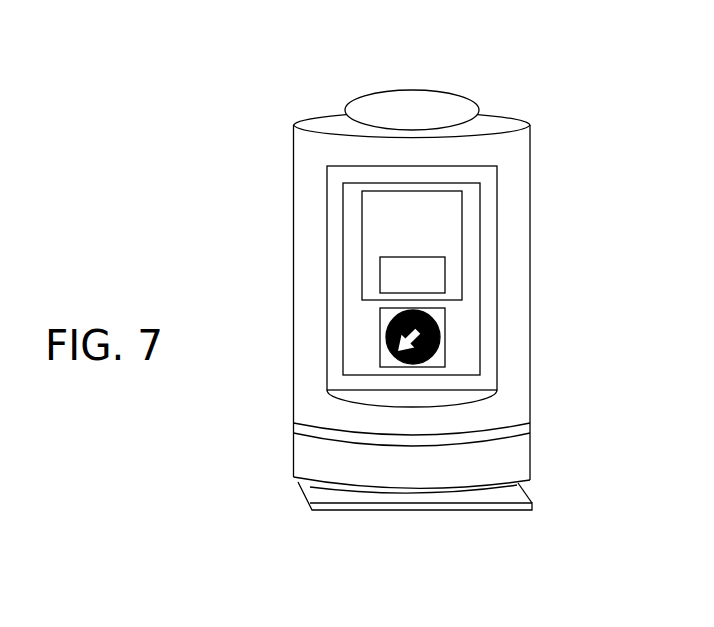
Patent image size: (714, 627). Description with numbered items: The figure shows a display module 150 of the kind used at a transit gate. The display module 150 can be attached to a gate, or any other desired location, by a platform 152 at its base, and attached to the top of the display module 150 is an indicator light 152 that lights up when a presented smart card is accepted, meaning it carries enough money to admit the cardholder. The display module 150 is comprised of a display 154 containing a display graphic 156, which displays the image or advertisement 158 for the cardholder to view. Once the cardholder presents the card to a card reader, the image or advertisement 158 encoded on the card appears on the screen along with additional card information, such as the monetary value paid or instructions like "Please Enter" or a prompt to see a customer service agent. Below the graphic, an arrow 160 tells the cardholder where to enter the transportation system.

The display module 150 is at (300, 114).
The platform 152 is at (412, 90).
The display 154 is at (496, 207).
The display graphic 156 is at (361, 208).
The image or advertisement 158 is at (446, 277).
The arrow 160 is at (378, 323).